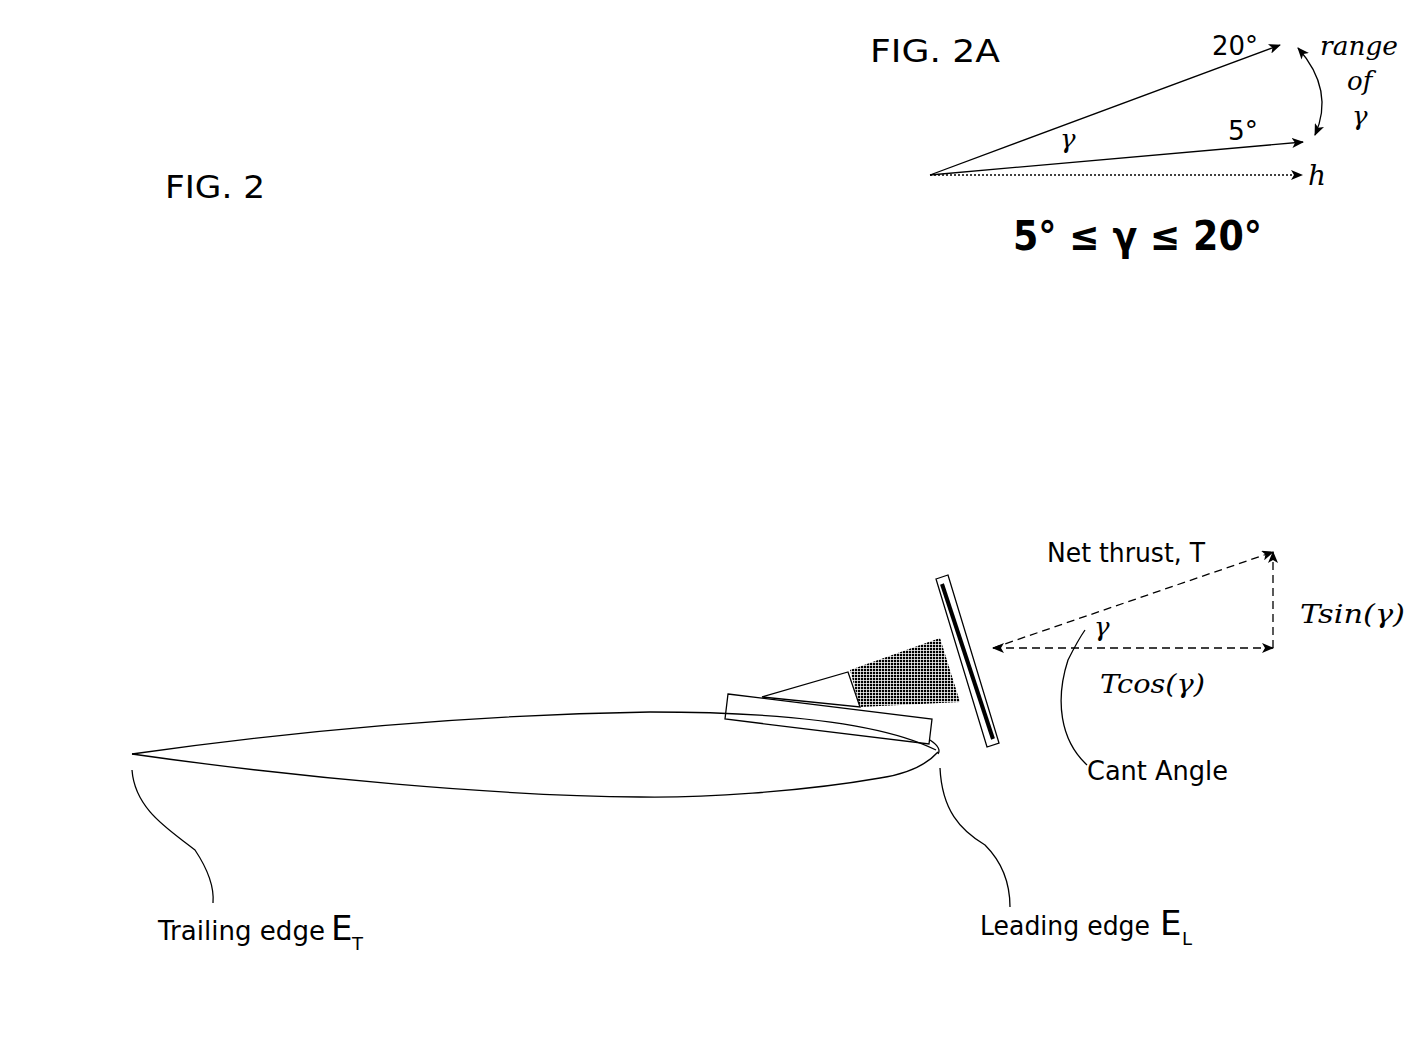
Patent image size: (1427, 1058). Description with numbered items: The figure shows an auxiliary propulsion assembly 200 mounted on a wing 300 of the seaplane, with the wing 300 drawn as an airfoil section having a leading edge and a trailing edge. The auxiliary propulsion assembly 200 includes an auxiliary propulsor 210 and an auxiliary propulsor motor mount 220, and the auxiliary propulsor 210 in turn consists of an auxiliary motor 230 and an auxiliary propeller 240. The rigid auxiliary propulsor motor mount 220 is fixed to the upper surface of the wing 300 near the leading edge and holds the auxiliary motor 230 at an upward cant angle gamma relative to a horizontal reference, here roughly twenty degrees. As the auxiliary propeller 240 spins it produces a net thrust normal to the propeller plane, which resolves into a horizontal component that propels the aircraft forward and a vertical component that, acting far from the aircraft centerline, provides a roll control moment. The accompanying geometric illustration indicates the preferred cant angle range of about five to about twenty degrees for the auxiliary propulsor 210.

The auxiliary propulsion assembly 200 is at (558, 545).
The auxiliary propulsor 210 is at (937, 417).
The auxiliary propulsor motor mount 220 is at (805, 675).
The auxiliary motor 230 is at (898, 640).
The auxiliary propeller 240 is at (940, 572).
The wing 300 is at (492, 710).